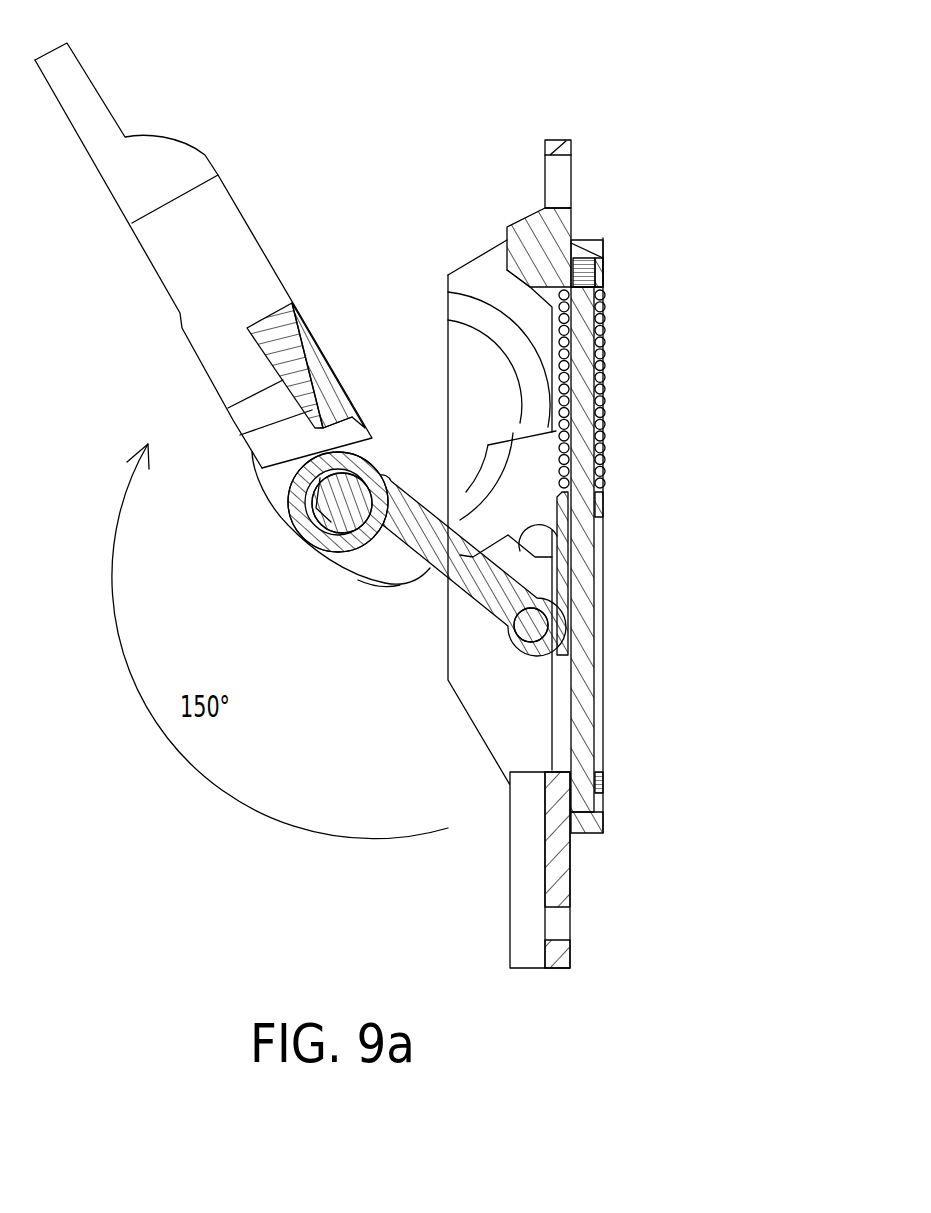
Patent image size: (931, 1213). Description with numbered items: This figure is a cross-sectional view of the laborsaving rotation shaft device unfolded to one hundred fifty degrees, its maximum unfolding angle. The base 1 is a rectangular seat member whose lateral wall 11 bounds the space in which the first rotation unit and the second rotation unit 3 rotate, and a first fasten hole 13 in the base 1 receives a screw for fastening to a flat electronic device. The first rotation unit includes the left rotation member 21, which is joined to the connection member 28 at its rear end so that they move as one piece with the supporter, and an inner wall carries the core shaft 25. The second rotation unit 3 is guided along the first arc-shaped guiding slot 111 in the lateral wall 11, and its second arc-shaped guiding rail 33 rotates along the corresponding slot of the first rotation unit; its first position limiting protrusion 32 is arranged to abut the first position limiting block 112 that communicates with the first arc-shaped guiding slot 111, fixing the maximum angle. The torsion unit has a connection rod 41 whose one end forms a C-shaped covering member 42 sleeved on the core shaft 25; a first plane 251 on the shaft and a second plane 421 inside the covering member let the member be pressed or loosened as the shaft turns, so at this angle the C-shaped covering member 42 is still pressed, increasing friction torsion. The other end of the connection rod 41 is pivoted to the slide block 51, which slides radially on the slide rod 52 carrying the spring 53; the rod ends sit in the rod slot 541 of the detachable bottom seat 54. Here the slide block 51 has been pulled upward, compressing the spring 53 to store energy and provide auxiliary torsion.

The base 1 is at (563, 867).
The second rotation unit 3 is at (537, 458).
The lateral wall 11 is at (473, 380).
The first fasten hole 13 is at (558, 180).
The left rotation member 21 is at (277, 500).
The core shaft 25 is at (332, 520).
The connection member 28 is at (193, 267).
The first position limiting protrusion 32 is at (573, 551).
The second arc-shaped guiding rail 33 is at (480, 487).
The connection rod 41 is at (428, 567).
The C-shaped covering member 42 is at (303, 480).
The slide block 51 is at (563, 582).
The slide rod 52 is at (582, 688).
The spring 53 is at (598, 390).
The bottom seat 54 is at (582, 245).
The first arc-shaped guiding slot 111 is at (462, 313).
The first position limiting block 112 is at (639, 540).
The first plane 251 is at (313, 527).
The second plane 421 is at (402, 587).
The rod slot 541 is at (590, 265).